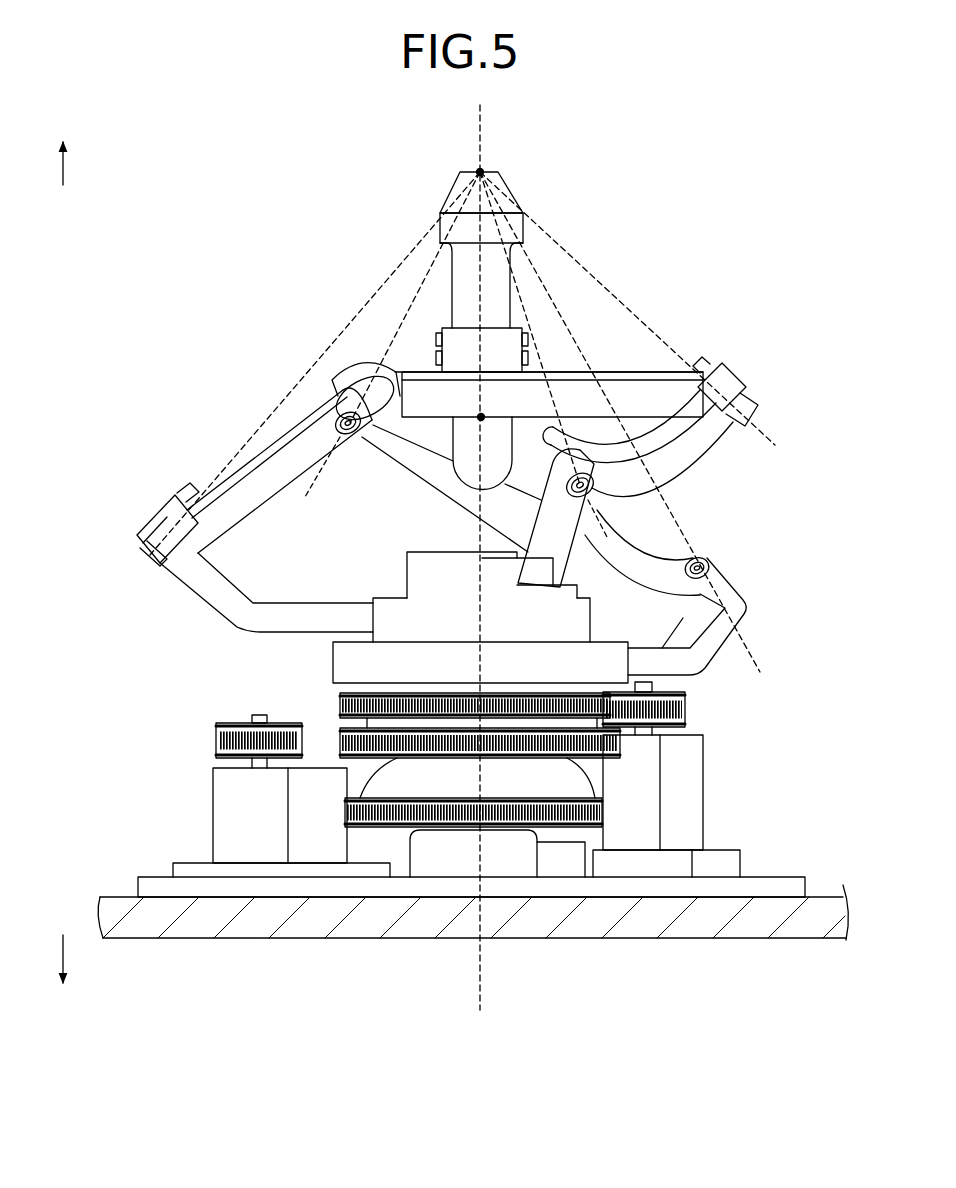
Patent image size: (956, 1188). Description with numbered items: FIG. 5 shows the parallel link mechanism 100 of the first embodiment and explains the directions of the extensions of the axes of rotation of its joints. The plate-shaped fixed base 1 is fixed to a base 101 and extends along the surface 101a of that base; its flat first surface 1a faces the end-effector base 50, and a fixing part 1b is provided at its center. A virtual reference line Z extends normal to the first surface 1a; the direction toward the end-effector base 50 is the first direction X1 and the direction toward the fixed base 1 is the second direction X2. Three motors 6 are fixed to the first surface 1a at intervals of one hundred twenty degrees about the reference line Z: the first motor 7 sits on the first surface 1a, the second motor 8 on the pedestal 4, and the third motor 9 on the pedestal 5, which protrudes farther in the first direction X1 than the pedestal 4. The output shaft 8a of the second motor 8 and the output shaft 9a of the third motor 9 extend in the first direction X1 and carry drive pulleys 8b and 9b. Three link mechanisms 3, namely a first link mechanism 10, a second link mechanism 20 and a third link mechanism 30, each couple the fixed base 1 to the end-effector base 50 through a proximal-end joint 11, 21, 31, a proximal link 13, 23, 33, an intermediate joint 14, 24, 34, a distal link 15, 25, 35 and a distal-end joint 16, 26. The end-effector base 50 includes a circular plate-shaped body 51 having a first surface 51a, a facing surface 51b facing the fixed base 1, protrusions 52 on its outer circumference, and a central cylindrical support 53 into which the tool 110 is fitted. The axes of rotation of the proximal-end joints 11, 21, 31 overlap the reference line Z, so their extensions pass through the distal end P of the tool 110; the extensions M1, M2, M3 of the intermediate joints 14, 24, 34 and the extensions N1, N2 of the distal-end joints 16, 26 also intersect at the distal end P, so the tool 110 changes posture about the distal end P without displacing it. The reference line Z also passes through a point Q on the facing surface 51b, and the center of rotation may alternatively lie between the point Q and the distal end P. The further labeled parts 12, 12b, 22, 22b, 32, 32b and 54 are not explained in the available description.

The parallel link mechanism 100 is at (720, 216).
The tool 110 is at (452, 190).
The fixed base 1 is at (770, 885).
The first surface 1a is at (718, 850).
The fixing part 1b is at (466, 873).
The base 101 is at (820, 915).
The surface 101a is at (790, 897).
The link mechanism 3 is at (473, 463).
The first link mechanism 10 is at (561, 410).
The second link mechanism 20 is at (149, 504).
The third link mechanism 30 is at (757, 582).
The pedestal 4 is at (260, 870).
The pedestal 5 is at (670, 873).
The motor 6 is at (244, 782).
The first motor 7 is at (560, 873).
The second motor 8 is at (235, 812).
The output shaft 8a is at (255, 717).
The drive pulley 8b is at (218, 738).
The third motor 9 is at (700, 768).
The output shaft 9a is at (652, 685).
The drive pulley 9b is at (688, 712).
The first proximal-end joint 11 is at (404, 564).
The first rotary member 12 is at (418, 840).
The first rotary member base 12b is at (473, 853).
The first proximal link 13 is at (607, 540).
The first intermediate joint 14 is at (593, 491).
The first distal link 15 is at (688, 458).
The first distal-end joint 16 is at (766, 417).
The second proximal-end joint 21 is at (374, 594).
The second rotary member 22 is at (345, 740).
The second rotary member gear 22b is at (480, 743).
The second proximal link 23 is at (237, 600).
The second intermediate joint 24 is at (149, 570).
The second distal link 25 is at (262, 465).
The second distal-end joint 26 is at (350, 443).
The third proximal-end joint 31 is at (329, 652).
The third rotary member 32 is at (342, 700).
The third rotary member gear 32b is at (475, 705).
The third proximal link 33 is at (745, 613).
The third intermediate joint 34 is at (710, 563).
The third distal link 35 is at (447, 488).
The end-effector base 50 is at (648, 388).
The body 51 is at (542, 418).
The first surface 51a is at (648, 385).
The facing surface 51b is at (412, 428).
The protrusion 52 is at (352, 362).
The support 53 is at (446, 352).
The joint block 54 is at (722, 364).
The distal end P is at (486, 173).
The point Q is at (481, 417).
The reference line Z is at (487, 115).
The first direction X1 is at (64, 150).
The second direction X2 is at (64, 973).
The extension M1 is at (615, 526).
The extension M2 is at (285, 390).
The extension M3 is at (644, 430).
The extension N1 is at (645, 321).
The extension N2 is at (314, 481).